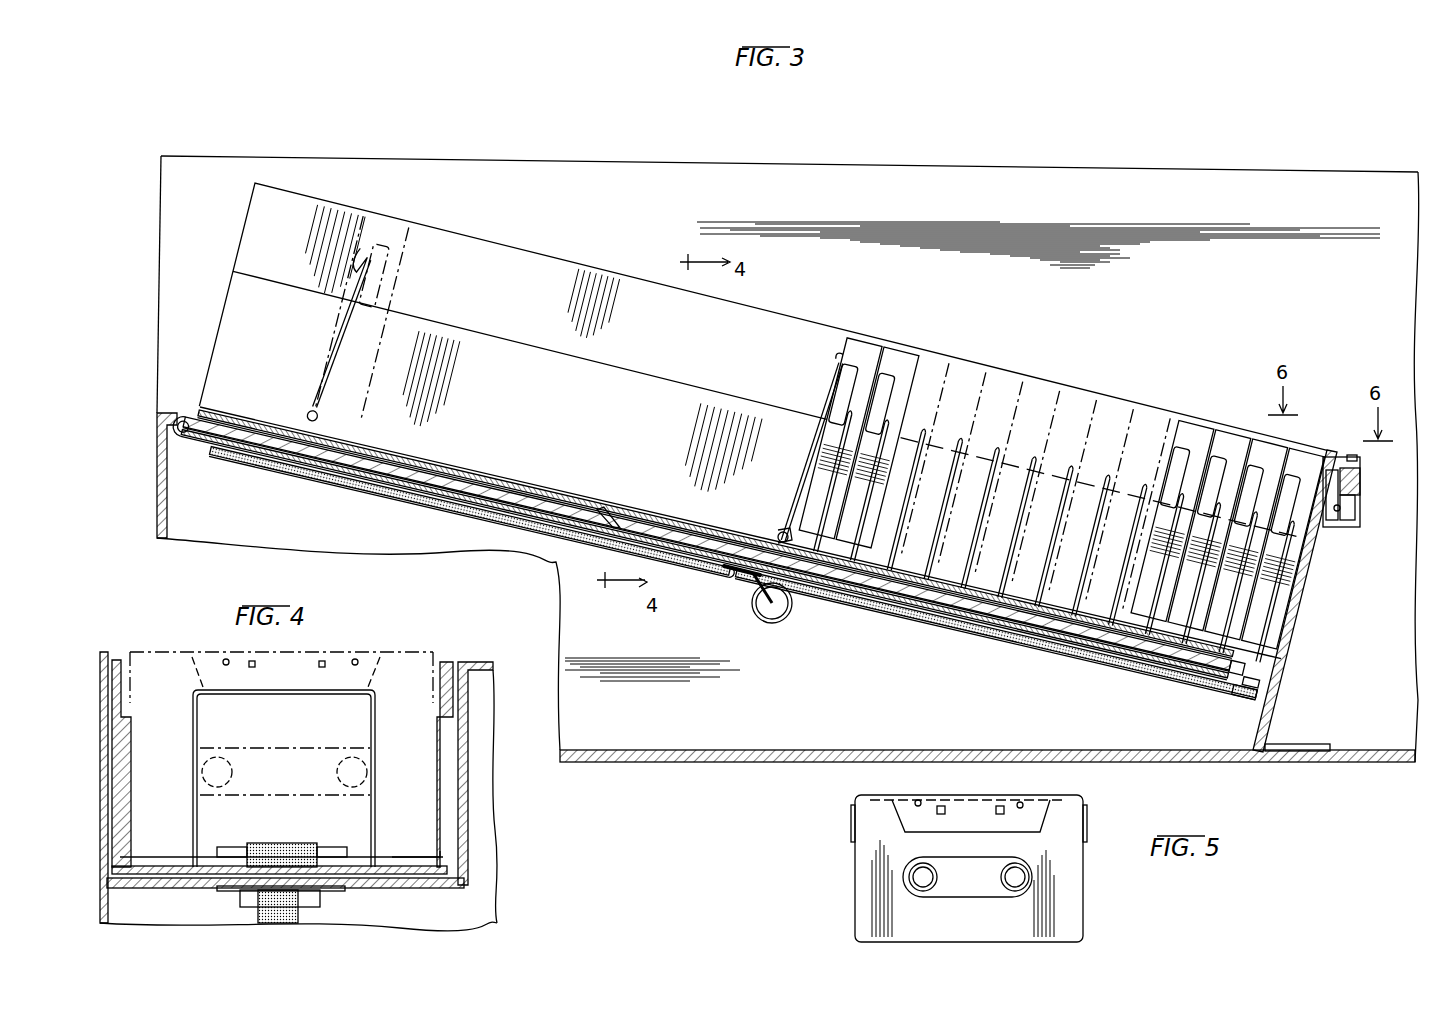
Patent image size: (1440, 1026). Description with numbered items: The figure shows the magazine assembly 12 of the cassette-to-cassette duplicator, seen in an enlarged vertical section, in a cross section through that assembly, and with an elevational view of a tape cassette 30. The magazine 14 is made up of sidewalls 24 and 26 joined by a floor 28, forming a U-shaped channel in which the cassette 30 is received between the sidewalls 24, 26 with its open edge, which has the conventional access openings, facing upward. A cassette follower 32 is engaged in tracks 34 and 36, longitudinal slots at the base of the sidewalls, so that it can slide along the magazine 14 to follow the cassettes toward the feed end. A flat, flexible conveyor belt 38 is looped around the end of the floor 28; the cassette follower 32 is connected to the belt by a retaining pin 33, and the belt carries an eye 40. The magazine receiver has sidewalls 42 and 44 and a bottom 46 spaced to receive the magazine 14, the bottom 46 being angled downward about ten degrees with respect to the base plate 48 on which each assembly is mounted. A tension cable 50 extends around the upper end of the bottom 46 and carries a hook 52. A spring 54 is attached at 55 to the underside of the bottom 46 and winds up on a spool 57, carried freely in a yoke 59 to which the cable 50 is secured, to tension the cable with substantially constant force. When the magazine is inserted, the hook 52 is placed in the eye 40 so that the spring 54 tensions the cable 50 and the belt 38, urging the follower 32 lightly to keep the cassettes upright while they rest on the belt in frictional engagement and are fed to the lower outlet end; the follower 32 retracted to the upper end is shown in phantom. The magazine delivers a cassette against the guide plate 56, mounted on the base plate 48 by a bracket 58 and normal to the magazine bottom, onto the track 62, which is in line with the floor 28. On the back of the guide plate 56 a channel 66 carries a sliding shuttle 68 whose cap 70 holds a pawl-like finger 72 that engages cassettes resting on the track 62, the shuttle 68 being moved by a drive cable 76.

In FIG. 3, the magazine assembly 12 is at (516, 186).
In FIG. 4, the magazine assembly 12 is at (165, 636).
In FIG. 3, the magazine 14 is at (635, 270).
In FIG. 4, the magazine 14 is at (115, 808).
In FIG. 3, the sidewall 24 is at (533, 272).
In FIG. 4, the sidewall 24 is at (120, 752).
In FIG. 4, the sidewall 26 is at (455, 798).
In FIG. 3, the floor 28 is at (432, 480).
In FIG. 4, the floor 28 is at (145, 874).
In FIG. 3, the cassette 30 is at (878, 346).
In FIG. 4, the cassette 30 is at (412, 652).
In FIG. 5, the cassette 30 is at (853, 896).
In FIG. 3, the cassette follower 32 is at (366, 234).
In FIG. 4, the cassette follower 32 is at (205, 690).
In FIG. 3, the retaining pin 33 is at (776, 536).
In FIG. 4, the retaining pin 33 is at (330, 855).
In FIG. 3, the track 34 is at (505, 488).
In FIG. 4, the track 34 is at (125, 853).
In FIG. 4, the track 36 is at (437, 856).
In FIG. 3, the conveyor belt 38 is at (350, 466).
In FIG. 4, the conveyor belt 38 is at (278, 845).
In FIG. 3, the eye 40 is at (612, 526).
In FIG. 3, the sidewall 42 is at (200, 176).
In FIG. 4, the sidewall 42 is at (102, 712).
In FIG. 4, the sidewall 44 is at (465, 840).
In FIG. 3, the bottom 46 is at (925, 606).
In FIG. 4, the bottom 46 is at (470, 884).
In FIG. 3, the base plate 48 is at (1020, 749).
In FIG. 3, the tension cable 50 is at (298, 468).
In FIG. 3, the hook 52 is at (632, 522).
In FIG. 3, the spring 54 is at (1100, 655).
In FIG. 3, the attachment point 55 is at (1230, 695).
In FIG. 3, the guide plate 56 is at (1310, 578).
In FIG. 3, the spool 57 is at (795, 605).
In FIG. 3, the bracket 58 is at (1312, 748).
In FIG. 3, the yoke 59 is at (745, 582).
In FIG. 3, the track 62 is at (1260, 658).
In FIG. 3, the channel 66 is at (1356, 522).
In FIG. 3, the shuttle 68 is at (1357, 505).
In FIG. 3, the cap 70 is at (1361, 476).
In FIG. 3, the finger 72 is at (1332, 460).
In FIG. 3, the drive cable 76 is at (1338, 527).